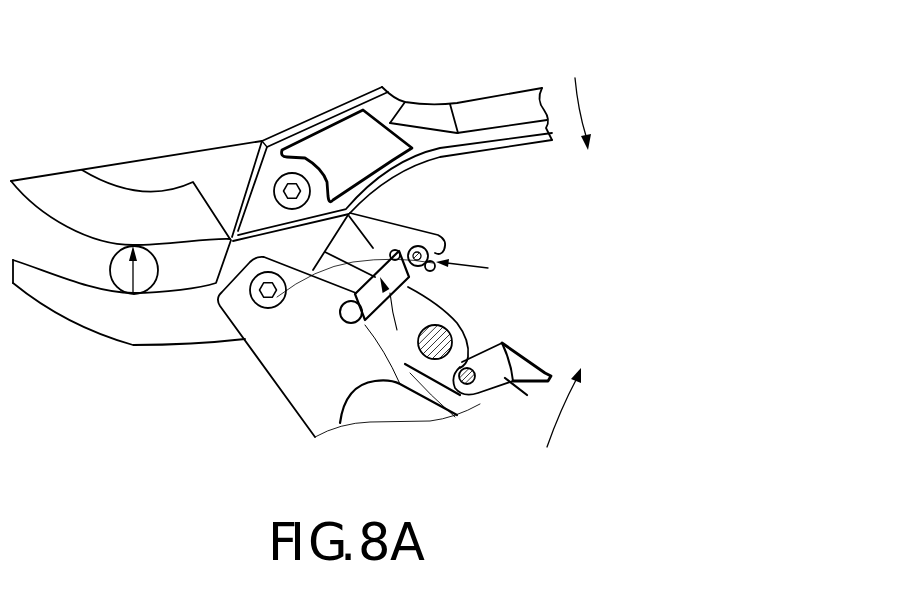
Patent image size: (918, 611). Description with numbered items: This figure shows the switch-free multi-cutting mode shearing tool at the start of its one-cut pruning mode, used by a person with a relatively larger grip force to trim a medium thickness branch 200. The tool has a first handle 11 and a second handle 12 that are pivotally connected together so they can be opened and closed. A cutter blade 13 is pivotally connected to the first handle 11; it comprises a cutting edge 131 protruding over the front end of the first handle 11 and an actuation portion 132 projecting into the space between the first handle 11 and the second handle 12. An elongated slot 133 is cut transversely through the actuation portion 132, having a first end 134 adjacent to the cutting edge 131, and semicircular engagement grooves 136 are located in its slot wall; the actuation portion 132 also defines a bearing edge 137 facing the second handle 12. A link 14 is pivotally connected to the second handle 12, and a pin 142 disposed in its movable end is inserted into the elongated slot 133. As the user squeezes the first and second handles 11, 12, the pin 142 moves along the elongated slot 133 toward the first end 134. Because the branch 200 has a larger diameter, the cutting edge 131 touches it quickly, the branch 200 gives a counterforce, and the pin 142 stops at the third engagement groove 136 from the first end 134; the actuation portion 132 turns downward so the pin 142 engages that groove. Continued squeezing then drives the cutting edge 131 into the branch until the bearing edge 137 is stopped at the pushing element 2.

The first handle 11 is at (505, 92).
The second handle 12 is at (508, 394).
The cutter blade 13 is at (130, 173).
The cutting edge 131 is at (52, 197).
The actuation portion 132 is at (363, 215).
The elongated slot 133 is at (409, 312).
The first end 134 is at (262, 304).
The engagement grooves 136 is at (384, 272).
The bearing edge 137 is at (437, 290).
The link 14 is at (376, 279).
The pin 142 is at (419, 247).
The pushing element 2 is at (463, 417).
The medium thickness branch 200 is at (110, 273).